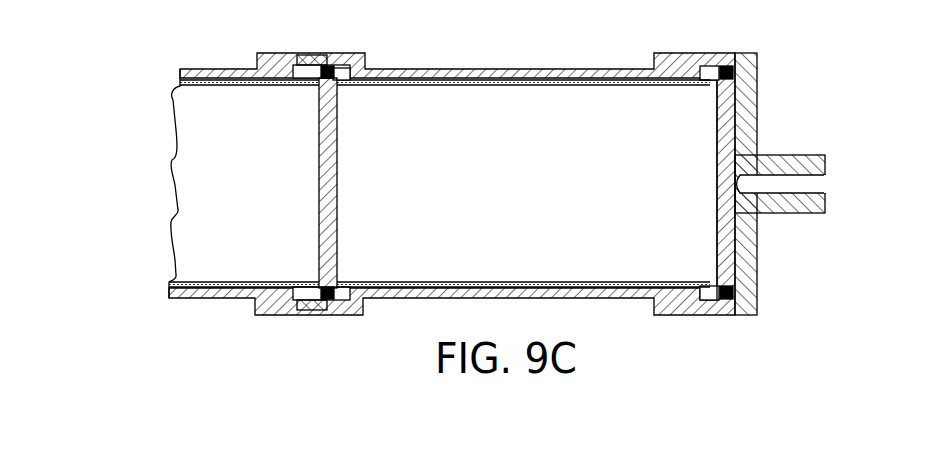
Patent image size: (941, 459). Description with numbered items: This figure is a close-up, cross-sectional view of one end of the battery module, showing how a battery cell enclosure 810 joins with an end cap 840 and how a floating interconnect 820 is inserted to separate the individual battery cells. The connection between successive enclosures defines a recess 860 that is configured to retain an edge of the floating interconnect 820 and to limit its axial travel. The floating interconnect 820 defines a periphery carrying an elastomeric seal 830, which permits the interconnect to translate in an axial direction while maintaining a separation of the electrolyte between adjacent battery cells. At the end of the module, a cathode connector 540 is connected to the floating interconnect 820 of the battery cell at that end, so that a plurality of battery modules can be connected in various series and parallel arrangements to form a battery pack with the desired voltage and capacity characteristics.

The cathode connector 540 is at (809, 153).
The battery cell enclosure 810 is at (253, 282).
The floating interconnect 820 is at (715, 152).
The elastomeric seal 830 is at (319, 72).
The end cap 840 is at (762, 266).
The recess 860 is at (342, 88).